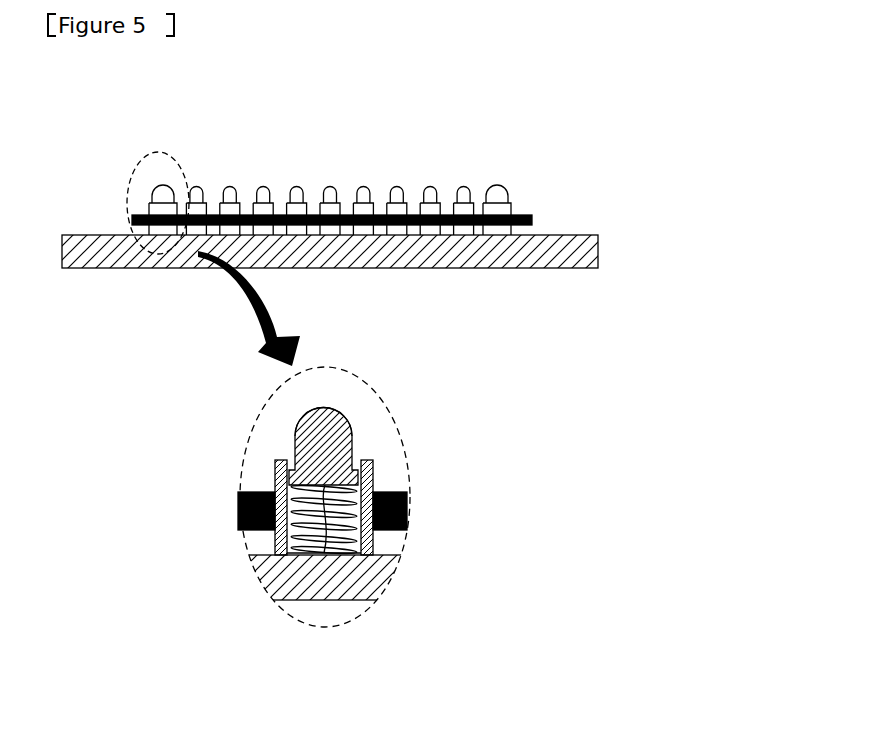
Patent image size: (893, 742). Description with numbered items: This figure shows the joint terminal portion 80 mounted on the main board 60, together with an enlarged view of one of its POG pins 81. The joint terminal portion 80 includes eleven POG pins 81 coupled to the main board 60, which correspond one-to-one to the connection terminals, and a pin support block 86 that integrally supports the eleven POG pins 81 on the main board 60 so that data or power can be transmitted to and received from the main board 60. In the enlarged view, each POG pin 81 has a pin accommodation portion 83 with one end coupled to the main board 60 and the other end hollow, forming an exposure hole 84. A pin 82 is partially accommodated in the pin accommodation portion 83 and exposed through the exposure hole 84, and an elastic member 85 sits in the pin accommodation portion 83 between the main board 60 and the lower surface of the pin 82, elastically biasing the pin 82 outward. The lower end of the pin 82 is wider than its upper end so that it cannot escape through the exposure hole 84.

The main board 60 is at (448, 252).
The joint terminal portion 80 is at (536, 211).
The POG pin 81 is at (452, 388).
The pin 82 is at (497, 193).
The pin accommodation portion 83 is at (228, 205).
The exposure hole 84 is at (355, 458).
The elastic member 85 is at (362, 486).
The pin support block 86 is at (312, 215).